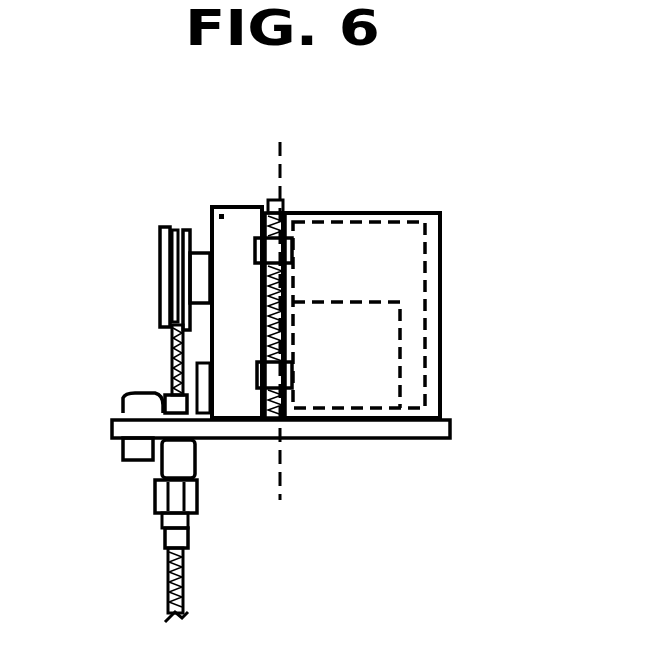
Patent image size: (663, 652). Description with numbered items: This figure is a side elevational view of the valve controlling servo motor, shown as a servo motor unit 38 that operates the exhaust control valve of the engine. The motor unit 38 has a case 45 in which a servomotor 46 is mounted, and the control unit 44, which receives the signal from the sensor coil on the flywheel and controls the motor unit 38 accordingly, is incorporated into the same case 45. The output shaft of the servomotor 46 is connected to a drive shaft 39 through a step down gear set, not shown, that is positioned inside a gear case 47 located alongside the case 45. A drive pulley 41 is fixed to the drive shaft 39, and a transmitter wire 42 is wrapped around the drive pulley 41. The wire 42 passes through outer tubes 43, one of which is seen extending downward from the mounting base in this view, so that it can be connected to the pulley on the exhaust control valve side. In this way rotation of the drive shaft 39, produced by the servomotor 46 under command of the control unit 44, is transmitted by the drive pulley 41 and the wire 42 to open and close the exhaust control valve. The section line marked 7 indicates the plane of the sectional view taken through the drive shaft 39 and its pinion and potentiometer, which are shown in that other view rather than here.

The servo motor unit 38 is at (457, 282).
The drive shaft 39 is at (160, 268).
The drive pulley 41 is at (162, 238).
The transmitter wire 42 is at (167, 350).
The outer tube 43 is at (162, 540).
The control unit 44 is at (385, 242).
The case 45 is at (352, 213).
The servomotor 46 is at (347, 383).
The gear case 47 is at (212, 209).
The section line 7- 7 is at (280, 142).